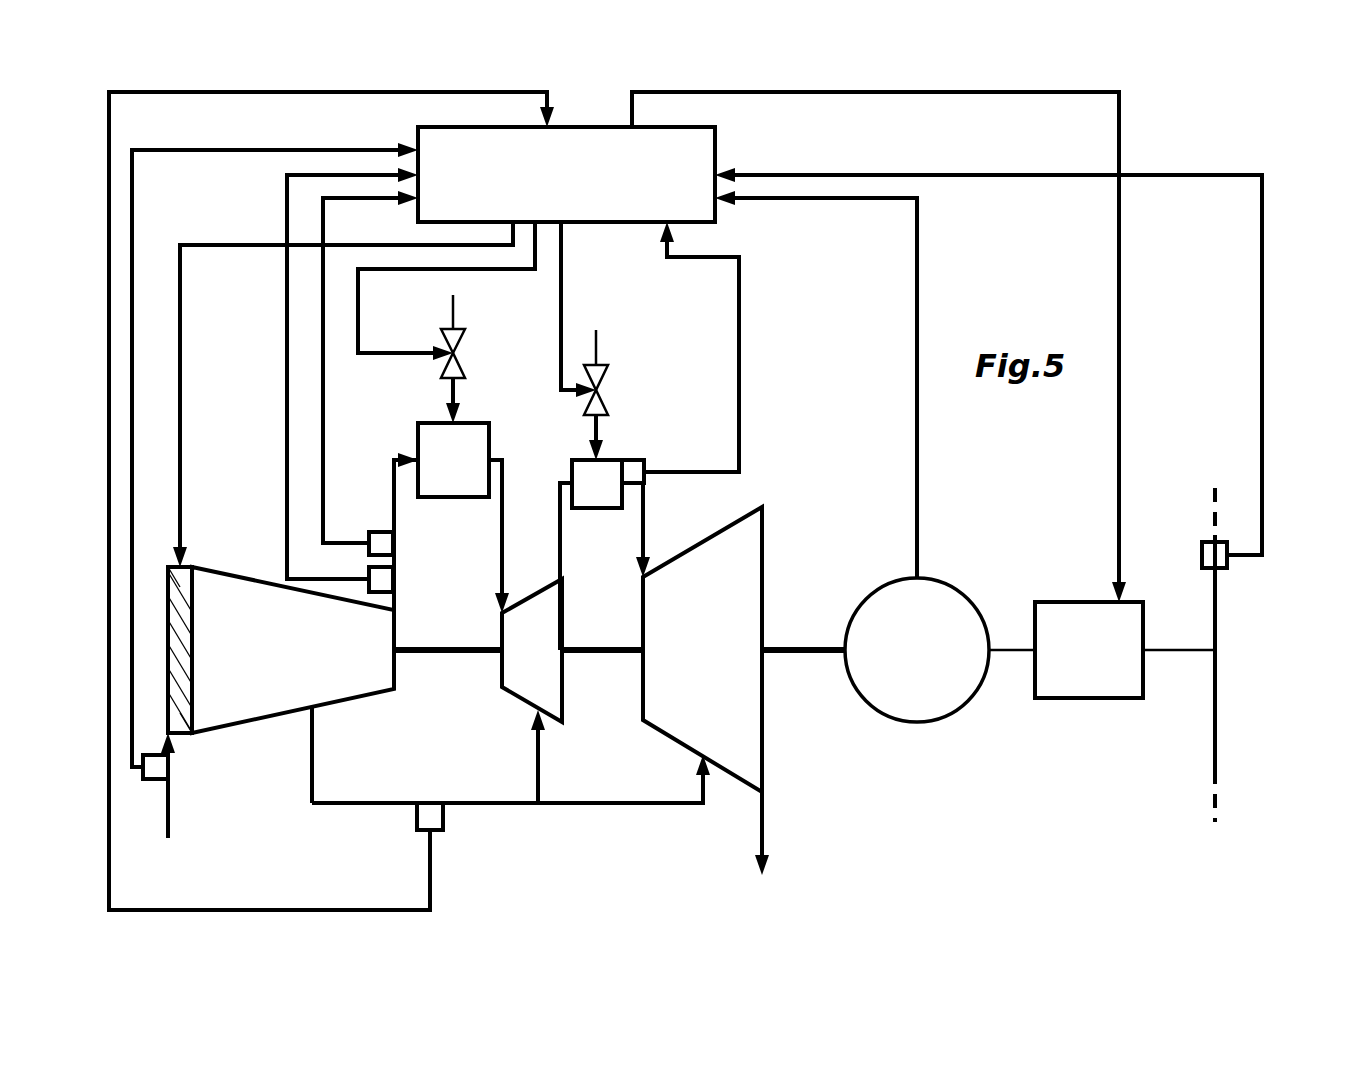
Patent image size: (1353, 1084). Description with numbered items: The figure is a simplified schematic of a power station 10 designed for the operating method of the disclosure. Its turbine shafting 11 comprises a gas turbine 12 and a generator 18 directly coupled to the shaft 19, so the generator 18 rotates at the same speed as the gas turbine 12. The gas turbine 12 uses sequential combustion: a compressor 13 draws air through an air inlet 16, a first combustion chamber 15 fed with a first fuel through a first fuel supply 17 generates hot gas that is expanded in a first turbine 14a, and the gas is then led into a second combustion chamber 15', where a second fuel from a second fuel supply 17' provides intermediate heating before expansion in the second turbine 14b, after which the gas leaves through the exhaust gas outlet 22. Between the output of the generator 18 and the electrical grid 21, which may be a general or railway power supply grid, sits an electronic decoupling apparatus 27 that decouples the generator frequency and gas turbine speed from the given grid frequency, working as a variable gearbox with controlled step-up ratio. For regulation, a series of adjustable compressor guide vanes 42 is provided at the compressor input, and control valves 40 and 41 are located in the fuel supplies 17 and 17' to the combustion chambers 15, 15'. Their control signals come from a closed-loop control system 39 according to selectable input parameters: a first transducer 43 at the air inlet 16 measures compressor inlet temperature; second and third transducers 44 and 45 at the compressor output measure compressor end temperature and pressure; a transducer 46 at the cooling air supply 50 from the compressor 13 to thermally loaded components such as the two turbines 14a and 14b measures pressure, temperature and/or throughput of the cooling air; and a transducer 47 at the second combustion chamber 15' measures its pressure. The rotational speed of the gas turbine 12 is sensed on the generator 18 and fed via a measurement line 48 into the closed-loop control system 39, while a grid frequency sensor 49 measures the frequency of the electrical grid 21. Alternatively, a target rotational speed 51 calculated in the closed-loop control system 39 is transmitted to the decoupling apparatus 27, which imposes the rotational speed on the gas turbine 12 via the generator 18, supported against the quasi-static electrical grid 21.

The power station 10 is at (1022, 801).
The turbine shafting 11 is at (614, 583).
The gas turbine 12 is at (628, 780).
The compressor 13 is at (294, 667).
The first turbine 14a is at (526, 685).
The second turbine 14b is at (742, 667).
The first combustion chamber 15 is at (427, 438).
The second combustion chamber 15' is at (570, 468).
The air inlet 16 is at (170, 792).
The first fuel supply 17 is at (492, 395).
The second fuel supply 17' is at (652, 408).
The generator 18 is at (933, 668).
The shaft 19 is at (789, 645).
The electrical grid 21 is at (1217, 697).
The exhaust gas outlet 22 is at (765, 828).
The decoupling apparatus 27 is at (1071, 650).
The closed-loop control system 39 is at (578, 195).
The control valve 40 is at (465, 338).
The control valve 41 is at (597, 380).
The adjustable compressor guide vanes 42 is at (183, 578).
The first transducer 43 is at (158, 767).
The second transducer 44 is at (382, 543).
The third transducer 45 is at (382, 580).
The transducer 46 is at (432, 817).
The transducer 47 is at (634, 472).
The measurement line 48 is at (920, 280).
The grid frequency sensor 49 is at (1228, 558).
The cooling air supply 50 is at (573, 807).
The generator target rotation speed 51 is at (1122, 125).